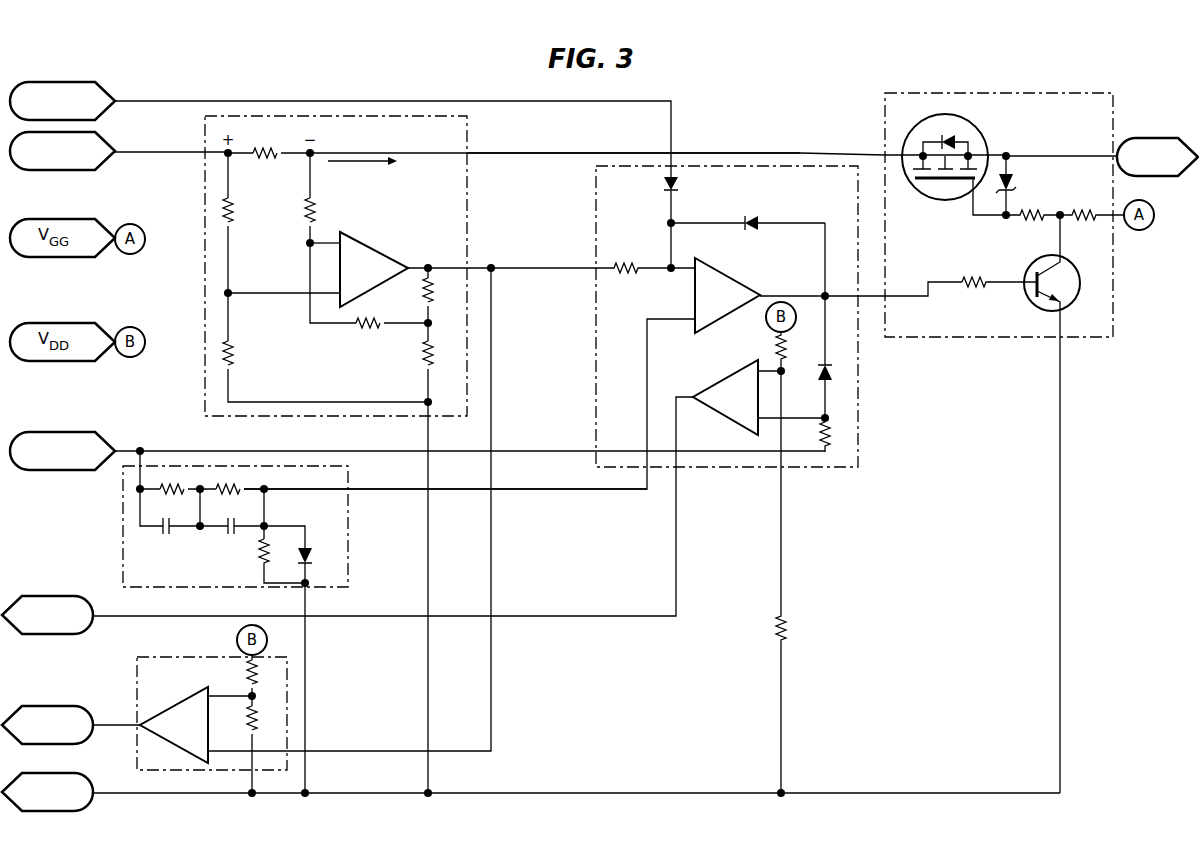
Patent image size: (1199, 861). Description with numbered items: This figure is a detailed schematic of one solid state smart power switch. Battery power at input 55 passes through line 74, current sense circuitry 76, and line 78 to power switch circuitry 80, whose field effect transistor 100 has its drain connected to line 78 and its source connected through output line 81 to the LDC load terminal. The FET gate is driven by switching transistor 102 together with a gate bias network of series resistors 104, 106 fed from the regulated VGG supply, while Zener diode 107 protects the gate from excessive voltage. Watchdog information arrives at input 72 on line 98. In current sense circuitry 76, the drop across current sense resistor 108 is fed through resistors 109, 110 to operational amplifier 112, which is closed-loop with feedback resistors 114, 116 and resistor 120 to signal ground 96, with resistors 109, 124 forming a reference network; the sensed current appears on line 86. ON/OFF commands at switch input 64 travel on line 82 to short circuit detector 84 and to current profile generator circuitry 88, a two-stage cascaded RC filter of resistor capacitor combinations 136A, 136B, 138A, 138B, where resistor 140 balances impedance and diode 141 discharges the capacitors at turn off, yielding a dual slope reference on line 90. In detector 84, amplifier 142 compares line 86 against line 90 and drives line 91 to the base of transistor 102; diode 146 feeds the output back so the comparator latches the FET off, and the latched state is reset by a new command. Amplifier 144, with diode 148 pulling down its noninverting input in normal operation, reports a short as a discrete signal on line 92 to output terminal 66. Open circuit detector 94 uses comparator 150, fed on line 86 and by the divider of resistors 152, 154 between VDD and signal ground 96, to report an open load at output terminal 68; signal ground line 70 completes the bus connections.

The watchdog time input 72 is at (73, 82).
The watchdog signal line 98 is at (165, 106).
The line 74 is at (150, 156).
The battery power input 55 is at (76, 172).
The current sense circuitry 76 is at (468, 130).
The current sense resistor 108 is at (270, 139).
The resistor 109 is at (232, 212).
The resistor 110 is at (306, 212).
The operational amplifier 112 is at (390, 235).
The feedback resistor 114 is at (446, 288).
The feedback resistor 116 is at (362, 319).
The resistor 120 is at (424, 354).
The resistor 124 is at (232, 356).
The line 86 is at (531, 269).
The line 78 is at (699, 151).
The short circuit detector 84 is at (594, 193).
The diode 146 is at (752, 220).
The amplifier 142 is at (769, 279).
The line 91 is at (881, 301).
The power switch circuitry 80 is at (884, 106).
The field effect transistor 100 is at (960, 122).
The output line 81 is at (1112, 150).
The Zener diode 107 is at (1013, 189).
The series resistor 104 is at (1033, 203).
The series resistor 106 is at (1092, 203).
The switching transistor 102 is at (1038, 266).
The switch input 64 is at (74, 440).
The line 82 is at (544, 451).
The current profile generator circuitry 88 is at (121, 496).
The line 90 is at (547, 489).
The resistor 136A is at (164, 500).
The capacitor 136B is at (162, 537).
The resistor 138A is at (234, 500).
The capacitor 138B is at (232, 537).
The resistor 140 is at (266, 554).
The diode 141 is at (310, 561).
The output terminal 66 is at (72, 588).
The line 92 is at (549, 619).
The open circuit detector 94 is at (158, 650).
The comparator 150 is at (188, 703).
The resistor 152 is at (246, 673).
The resistor 154 is at (246, 719).
The output terminal 68 is at (72, 701).
The signal ground line 70 is at (70, 765).
The signal ground 96 is at (559, 796).
The amplifier 144 is at (738, 369).
The diode 148 is at (820, 382).